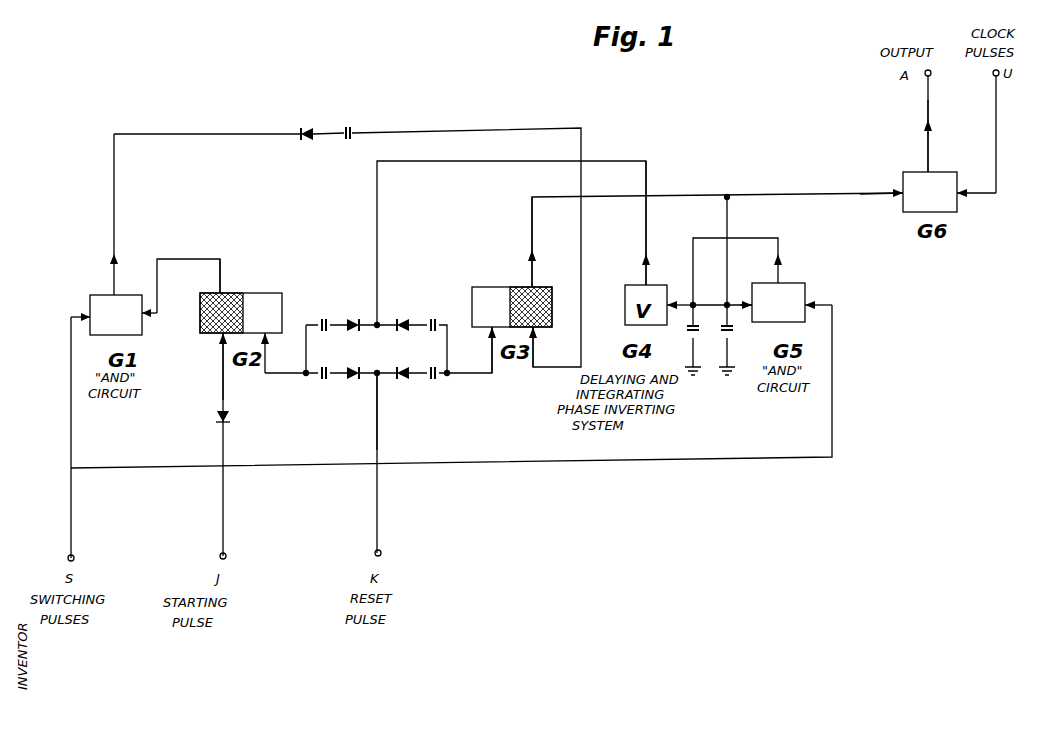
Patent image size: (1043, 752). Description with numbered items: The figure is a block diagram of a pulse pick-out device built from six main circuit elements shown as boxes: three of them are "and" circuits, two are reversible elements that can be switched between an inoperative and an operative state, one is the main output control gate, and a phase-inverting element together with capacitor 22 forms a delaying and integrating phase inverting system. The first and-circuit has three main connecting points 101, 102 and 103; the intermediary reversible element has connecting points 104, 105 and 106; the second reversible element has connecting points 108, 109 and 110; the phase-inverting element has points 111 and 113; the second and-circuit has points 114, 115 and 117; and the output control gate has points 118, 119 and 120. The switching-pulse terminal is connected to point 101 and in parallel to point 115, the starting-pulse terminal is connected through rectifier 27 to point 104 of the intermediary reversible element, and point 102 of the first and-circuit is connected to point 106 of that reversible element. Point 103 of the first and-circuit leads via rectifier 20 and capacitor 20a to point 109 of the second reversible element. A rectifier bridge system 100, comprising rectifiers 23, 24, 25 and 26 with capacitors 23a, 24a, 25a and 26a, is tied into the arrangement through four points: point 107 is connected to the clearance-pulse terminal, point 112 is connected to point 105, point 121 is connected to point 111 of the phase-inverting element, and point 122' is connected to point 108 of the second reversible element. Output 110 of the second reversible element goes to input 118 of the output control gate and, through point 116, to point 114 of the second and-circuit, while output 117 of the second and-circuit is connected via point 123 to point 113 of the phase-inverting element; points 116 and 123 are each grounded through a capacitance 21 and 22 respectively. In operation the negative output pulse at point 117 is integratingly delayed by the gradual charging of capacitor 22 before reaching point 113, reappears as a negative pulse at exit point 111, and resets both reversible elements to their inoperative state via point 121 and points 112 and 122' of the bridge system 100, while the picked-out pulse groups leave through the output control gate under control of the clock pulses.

The rectifier 20 is at (306, 128).
The capacitor 20a is at (352, 130).
The capacitance 21 is at (733, 331).
The capacitor 22 is at (687, 331).
The rectifier 23 is at (353, 318).
The capacitor 23a is at (320, 320).
The rectifier 24 is at (403, 318).
The capacitor 24a is at (436, 319).
The rectifier 25 is at (359, 380).
The capacitor 25a is at (320, 379).
The rectifier 26 is at (393, 380).
The capacitor 26a is at (436, 380).
The rectifier 27 is at (216, 418).
The rectifier bridge system 100 is at (376, 349).
The connecting point of G1 101 is at (82, 315).
The connecting point of G1 102 is at (145, 315).
The connecting point of G1 103 is at (116, 296).
The connecting point of G2 104 is at (221, 340).
The connecting point of G2 105 is at (270, 340).
The connecting point of G2 106 is at (220, 293).
The connecting point of bridge system 100 107 is at (377, 380).
The connecting point of G3 108 is at (489, 335).
The connecting point of G3 109 is at (535, 338).
The connecting point of G3 110 is at (534, 290).
The connecting point of G4 111 is at (647, 286).
The connecting point of bridge system 100 112 is at (300, 376).
The connecting point of G4 113 is at (686, 300).
The connecting point of G5 114 is at (747, 302).
The connecting point of G5 115 is at (810, 306).
The connecting point 116 is at (730, 308).
The connecting point of G5 117 is at (779, 286).
The input of G6 118 is at (898, 195).
The connecting point of G6 119 is at (968, 180).
The connecting point of G6 120 is at (930, 172).
The connecting point of bridge system 100 121 is at (378, 310).
The connecting point of bridge system 100 122' is at (486, 361).
The connecting point 123 is at (675, 300).